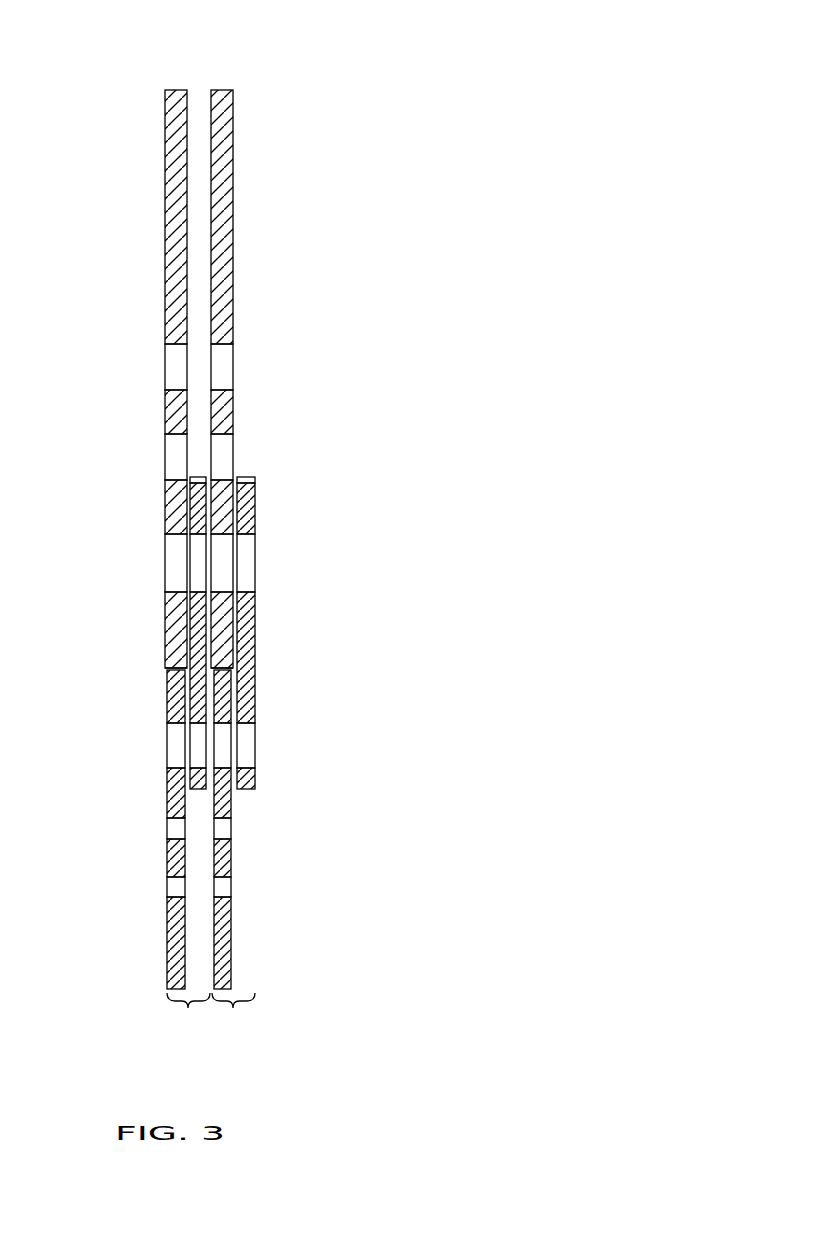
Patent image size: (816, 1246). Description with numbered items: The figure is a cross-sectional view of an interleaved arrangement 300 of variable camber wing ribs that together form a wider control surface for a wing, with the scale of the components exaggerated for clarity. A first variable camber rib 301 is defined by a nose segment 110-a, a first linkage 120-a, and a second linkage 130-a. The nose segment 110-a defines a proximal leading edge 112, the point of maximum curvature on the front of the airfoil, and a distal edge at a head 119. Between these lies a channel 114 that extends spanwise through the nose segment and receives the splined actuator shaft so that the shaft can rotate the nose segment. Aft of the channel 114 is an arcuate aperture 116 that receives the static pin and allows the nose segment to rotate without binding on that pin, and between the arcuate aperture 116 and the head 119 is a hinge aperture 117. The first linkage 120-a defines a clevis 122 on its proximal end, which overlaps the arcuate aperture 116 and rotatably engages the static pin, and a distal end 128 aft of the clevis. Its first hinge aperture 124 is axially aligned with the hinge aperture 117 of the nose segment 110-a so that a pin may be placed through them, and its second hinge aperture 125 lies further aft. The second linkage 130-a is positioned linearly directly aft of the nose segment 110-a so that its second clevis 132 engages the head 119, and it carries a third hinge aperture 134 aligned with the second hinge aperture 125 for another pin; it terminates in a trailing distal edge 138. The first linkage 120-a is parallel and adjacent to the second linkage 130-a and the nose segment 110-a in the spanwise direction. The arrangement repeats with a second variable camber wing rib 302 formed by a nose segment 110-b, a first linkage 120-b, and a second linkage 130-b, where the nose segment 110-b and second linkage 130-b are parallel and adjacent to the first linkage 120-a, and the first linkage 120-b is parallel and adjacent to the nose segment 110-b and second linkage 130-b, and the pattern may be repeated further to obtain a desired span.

The interleaved variable camber wing rib assembly 300 is at (378, 116).
The nose segment 110-a is at (165, 128).
The nose segment 110-b is at (233, 95).
The proximal leading edge 112 is at (176, 88).
The channel 114 is at (165, 368).
The arcuate aperture 116 is at (165, 455).
The hinge aperture 117 is at (175, 567).
The clevis 122 is at (197, 477).
The first hinge aperture 124 is at (200, 563).
The second hinge aperture 125 is at (200, 745).
The second clevis 132 is at (177, 667).
The head 119 is at (170, 683).
The third hinge aperture 134 is at (175, 750).
The distal end 128 is at (180, 807).
The first linkage 120-a is at (208, 680).
The first linkage 120-b is at (255, 773).
The second linkage 130-a is at (168, 983).
The second linkage 130-b is at (232, 943).
The trailing distal edge 138 is at (233, 979).
The variable camber rib 301 is at (188, 1008).
The variable camber wing rib 302 is at (232, 1008).